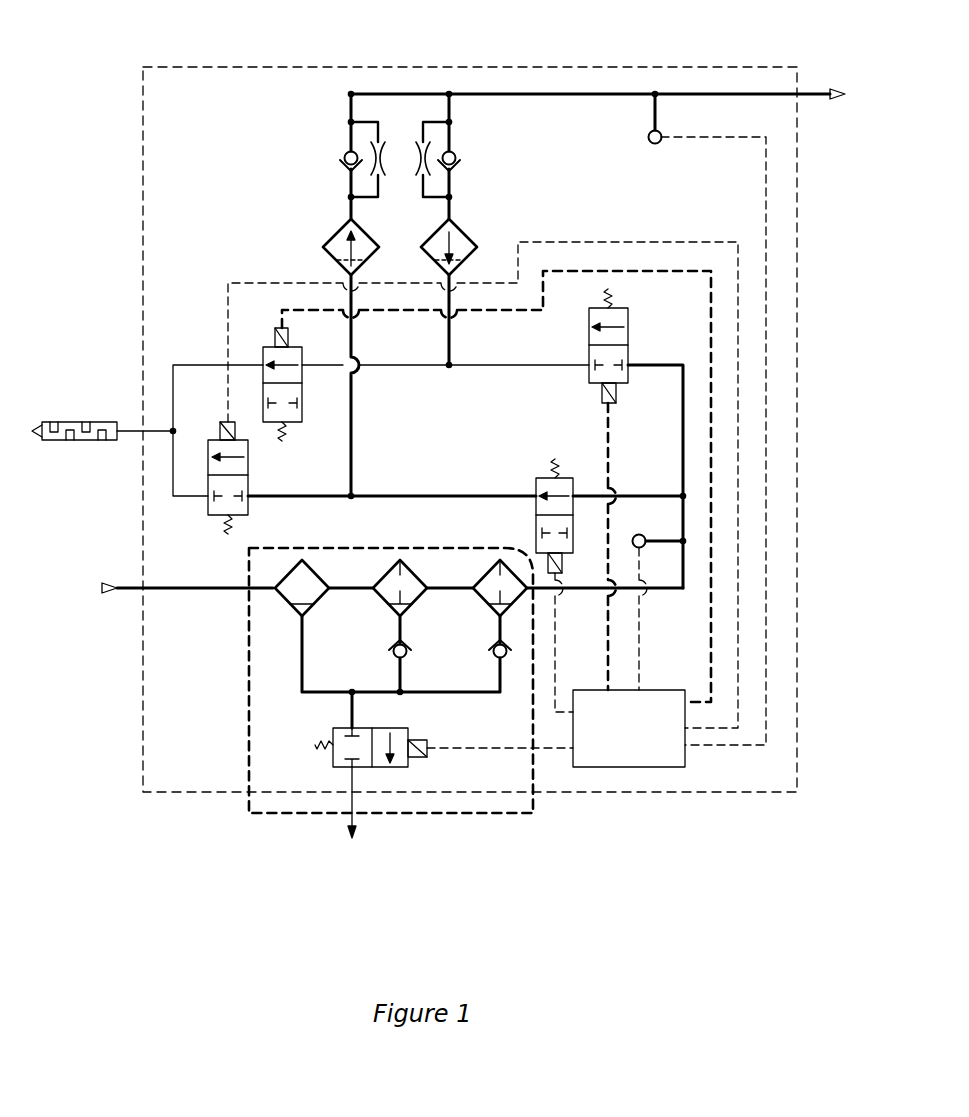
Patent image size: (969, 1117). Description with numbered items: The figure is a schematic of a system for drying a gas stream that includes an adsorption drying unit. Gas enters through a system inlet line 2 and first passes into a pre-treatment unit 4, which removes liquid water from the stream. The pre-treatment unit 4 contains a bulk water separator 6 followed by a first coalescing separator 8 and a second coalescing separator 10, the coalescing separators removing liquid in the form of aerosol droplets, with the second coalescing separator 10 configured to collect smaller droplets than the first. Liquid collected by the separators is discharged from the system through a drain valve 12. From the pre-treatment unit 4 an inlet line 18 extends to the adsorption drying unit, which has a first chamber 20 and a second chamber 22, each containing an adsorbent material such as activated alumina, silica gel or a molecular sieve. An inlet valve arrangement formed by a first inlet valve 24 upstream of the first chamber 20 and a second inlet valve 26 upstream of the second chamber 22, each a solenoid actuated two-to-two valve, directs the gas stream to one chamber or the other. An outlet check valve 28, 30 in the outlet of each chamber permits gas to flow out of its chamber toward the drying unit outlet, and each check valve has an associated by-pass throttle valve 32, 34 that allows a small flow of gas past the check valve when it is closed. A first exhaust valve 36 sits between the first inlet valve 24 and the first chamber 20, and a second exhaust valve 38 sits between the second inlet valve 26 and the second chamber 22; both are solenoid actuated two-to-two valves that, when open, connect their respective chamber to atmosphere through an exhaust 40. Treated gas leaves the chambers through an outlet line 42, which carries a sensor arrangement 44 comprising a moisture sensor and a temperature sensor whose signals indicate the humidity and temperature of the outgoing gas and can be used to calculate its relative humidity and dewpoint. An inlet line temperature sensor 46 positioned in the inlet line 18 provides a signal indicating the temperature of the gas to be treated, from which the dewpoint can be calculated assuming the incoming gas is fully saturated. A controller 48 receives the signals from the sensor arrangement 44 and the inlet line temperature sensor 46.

The system inlet line 2 is at (127, 590).
The pre-treatment unit 4 is at (249, 727).
The bulk water separator 6 is at (285, 600).
The first coalescing separator 8 is at (385, 603).
The second coalescing separator 10 is at (483, 603).
The drain valve 12 is at (333, 765).
The inlet line 18 is at (660, 590).
The first chamber 20 is at (330, 243).
The second chamber 22 is at (470, 240).
The first inlet valve 24 is at (536, 485).
The second inlet valve 26 is at (628, 322).
The outlet check valve 28 is at (343, 156).
The outlet check valve 30 is at (456, 153).
The by-pass throttle valve 32 is at (385, 155).
The by-pass throttle valve 34 is at (420, 162).
The first exhaust valve 36 is at (208, 505).
The second exhaust valve 38 is at (263, 350).
The exhaust 40 is at (82, 422).
The outlet line 42 is at (706, 94).
The sensor arrangement 44 is at (649, 137).
The inlet line temperature sensor 46 is at (645, 547).
The controller 48 is at (660, 768).